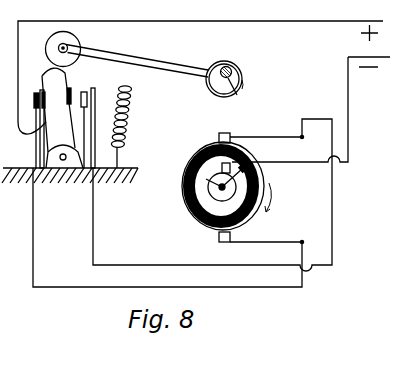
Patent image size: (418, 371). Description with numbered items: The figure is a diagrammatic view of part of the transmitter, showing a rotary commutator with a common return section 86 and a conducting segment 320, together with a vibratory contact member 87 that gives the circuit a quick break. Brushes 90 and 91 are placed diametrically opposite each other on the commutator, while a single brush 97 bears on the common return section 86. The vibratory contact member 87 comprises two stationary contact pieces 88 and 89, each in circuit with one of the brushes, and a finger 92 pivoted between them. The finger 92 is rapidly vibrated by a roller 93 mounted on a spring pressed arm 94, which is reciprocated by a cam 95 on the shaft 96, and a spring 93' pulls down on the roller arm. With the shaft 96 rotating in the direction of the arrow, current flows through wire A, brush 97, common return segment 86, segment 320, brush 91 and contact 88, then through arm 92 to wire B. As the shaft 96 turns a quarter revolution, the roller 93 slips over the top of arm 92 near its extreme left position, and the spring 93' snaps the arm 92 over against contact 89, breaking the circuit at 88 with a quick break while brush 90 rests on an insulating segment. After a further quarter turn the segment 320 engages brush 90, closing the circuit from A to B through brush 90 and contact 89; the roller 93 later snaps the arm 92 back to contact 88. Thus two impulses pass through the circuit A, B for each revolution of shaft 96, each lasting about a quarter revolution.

The common return section 86 is at (227, 193).
The vibratory contact member 87 is at (50, 155).
The stationary contact piece 88 is at (37, 92).
The stationary contact piece 89 is at (88, 92).
The brush 90 is at (219, 137).
The brush 91 is at (219, 242).
The finger 92 is at (58, 110).
The roller 93 is at (74, 48).
The spring 93' is at (136, 127).
The spring pressed arm 94 is at (162, 67).
The cam 95 is at (242, 68).
The shaft 96 is at (228, 133).
The brush 97 is at (222, 167).
The segment 320 is at (256, 224).
The wire A is at (348, 80).
The wire B is at (308, 23).